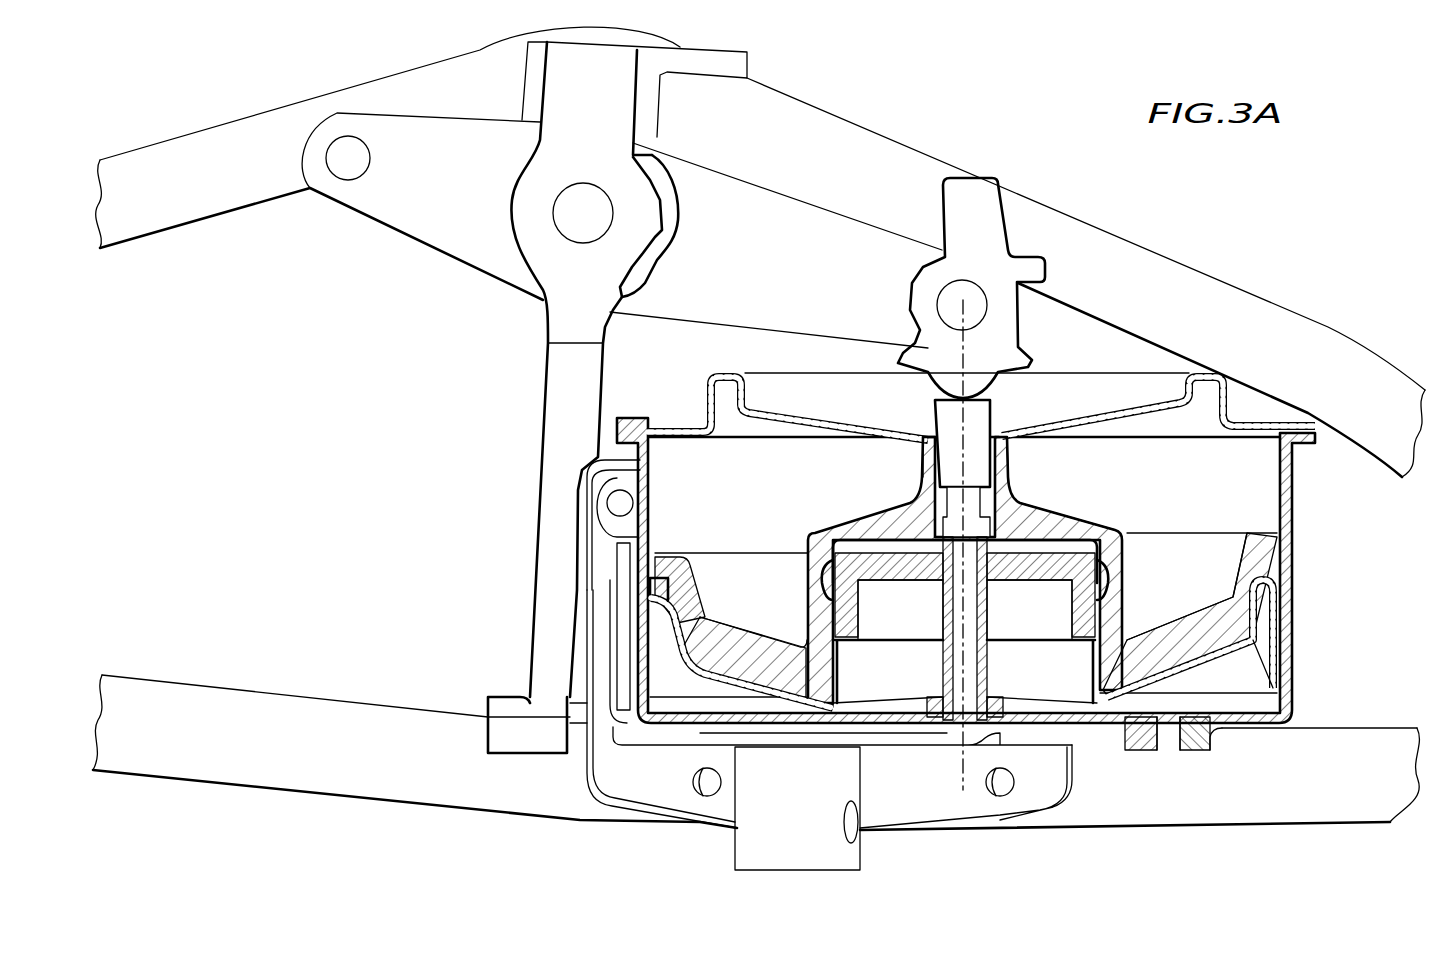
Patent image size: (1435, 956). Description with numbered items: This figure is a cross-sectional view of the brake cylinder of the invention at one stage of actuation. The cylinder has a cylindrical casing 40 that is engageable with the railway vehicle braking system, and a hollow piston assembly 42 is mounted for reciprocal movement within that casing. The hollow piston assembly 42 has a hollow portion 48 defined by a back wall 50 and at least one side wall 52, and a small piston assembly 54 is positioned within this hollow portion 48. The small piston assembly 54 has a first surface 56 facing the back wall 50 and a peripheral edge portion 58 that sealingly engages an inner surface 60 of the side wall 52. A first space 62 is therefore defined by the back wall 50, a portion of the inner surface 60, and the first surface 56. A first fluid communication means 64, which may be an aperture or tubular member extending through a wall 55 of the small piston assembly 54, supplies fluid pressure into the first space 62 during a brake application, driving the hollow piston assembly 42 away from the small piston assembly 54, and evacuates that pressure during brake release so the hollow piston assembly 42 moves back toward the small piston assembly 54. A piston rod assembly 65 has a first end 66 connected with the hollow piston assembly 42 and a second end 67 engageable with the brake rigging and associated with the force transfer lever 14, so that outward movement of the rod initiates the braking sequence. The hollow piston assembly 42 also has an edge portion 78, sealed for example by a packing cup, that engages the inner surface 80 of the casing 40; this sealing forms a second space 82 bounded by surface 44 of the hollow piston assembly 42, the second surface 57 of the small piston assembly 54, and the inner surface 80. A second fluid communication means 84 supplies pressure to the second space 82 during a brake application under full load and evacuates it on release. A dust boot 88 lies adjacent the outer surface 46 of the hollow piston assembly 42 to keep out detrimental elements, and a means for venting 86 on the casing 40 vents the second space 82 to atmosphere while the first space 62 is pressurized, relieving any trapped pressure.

The force transfer lever 14 is at (413, 230).
The cylindrical casing 40 is at (1293, 530).
The hollow piston assembly 42 is at (1103, 520).
The surface of the hollow piston assembly 44 is at (1213, 668).
The outer surface of the hollow piston assembly 46 is at (1035, 507).
The hollow portion 48 is at (847, 553).
The back wall 50 is at (883, 550).
The side wall 52 is at (823, 610).
The small piston assembly 54 is at (887, 583).
The wall of the small piston assembly 55 is at (907, 567).
The first surface 56 is at (1057, 550).
The second surface 57 is at (1013, 580).
The peripheral edge portion 58 is at (1110, 580).
The inner surface of the side wall 60 is at (833, 577).
The first space 62 is at (917, 547).
The first fluid communication means 64 is at (960, 715).
The piston rod assembly 65 is at (933, 390).
The first end of the piston rod assembly 66 is at (940, 440).
The second end of the piston rod assembly 67 is at (995, 383).
The edge portion 78 is at (1290, 597).
The inner surface of the cylindrical casing 80 is at (1278, 650).
The second space 82 is at (1262, 680).
The second fluid communication means 84 is at (1170, 742).
The means for venting 86 is at (1292, 467).
The dust boot 88 is at (757, 380).